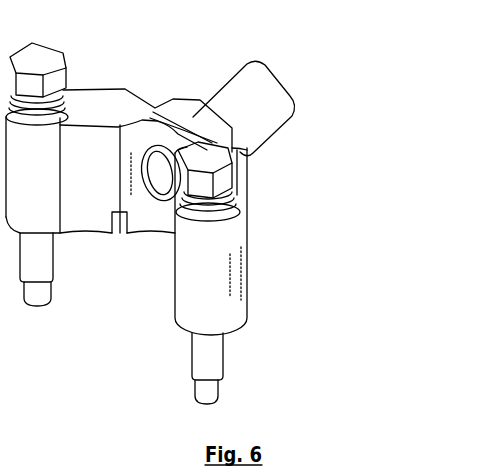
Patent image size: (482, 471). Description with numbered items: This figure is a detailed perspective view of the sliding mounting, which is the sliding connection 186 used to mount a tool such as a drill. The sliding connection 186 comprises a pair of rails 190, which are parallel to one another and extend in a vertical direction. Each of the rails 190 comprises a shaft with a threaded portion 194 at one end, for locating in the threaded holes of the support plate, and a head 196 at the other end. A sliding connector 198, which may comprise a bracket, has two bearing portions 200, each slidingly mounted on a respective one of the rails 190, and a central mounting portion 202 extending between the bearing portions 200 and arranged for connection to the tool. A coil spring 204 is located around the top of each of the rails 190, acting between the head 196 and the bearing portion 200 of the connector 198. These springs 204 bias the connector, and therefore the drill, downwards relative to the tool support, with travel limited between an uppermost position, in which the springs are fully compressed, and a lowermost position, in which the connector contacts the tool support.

The central mounting portion 202 is at (118, 108).
The head 196 is at (223, 177).
The coil spring 204 is at (243, 195).
The sliding connection 186 is at (247, 238).
The bearing portion 200 is at (232, 298).
The sliding connector 198 is at (175, 282).
The rail 190 is at (213, 353).
The threaded portion 194 is at (213, 392).